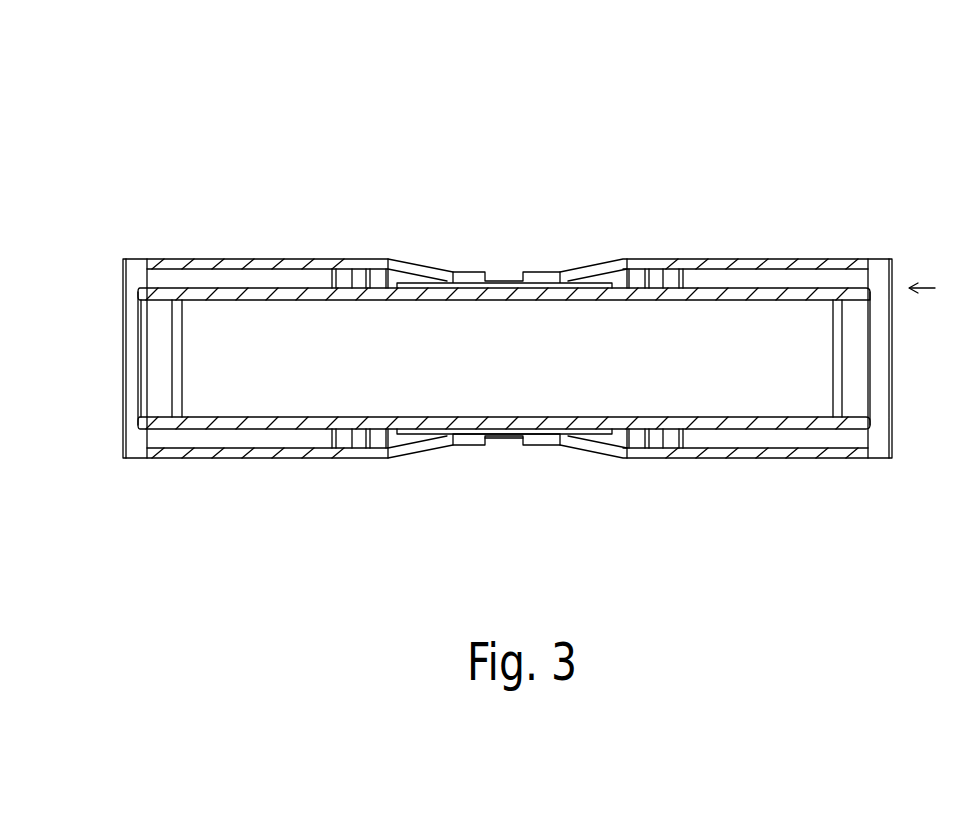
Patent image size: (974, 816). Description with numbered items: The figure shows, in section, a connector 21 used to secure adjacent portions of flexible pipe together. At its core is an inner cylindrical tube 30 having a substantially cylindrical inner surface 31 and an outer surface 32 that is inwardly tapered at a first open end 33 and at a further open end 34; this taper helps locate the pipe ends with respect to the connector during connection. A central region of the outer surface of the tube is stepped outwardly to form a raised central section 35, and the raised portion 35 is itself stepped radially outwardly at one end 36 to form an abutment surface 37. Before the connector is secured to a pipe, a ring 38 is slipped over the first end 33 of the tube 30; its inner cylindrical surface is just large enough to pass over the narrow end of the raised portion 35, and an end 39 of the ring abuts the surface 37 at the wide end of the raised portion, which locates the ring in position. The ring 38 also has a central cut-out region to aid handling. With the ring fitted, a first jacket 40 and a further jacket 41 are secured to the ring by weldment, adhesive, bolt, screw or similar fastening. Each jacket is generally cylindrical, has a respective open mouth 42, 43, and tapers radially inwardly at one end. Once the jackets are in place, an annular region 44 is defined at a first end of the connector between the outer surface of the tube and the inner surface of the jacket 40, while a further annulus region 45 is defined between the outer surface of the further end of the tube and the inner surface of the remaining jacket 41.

The connector 21 is at (592, 103).
The inner cylindrical tube 30 is at (220, 437).
The inner surface 31 is at (292, 407).
The outer surface 32 is at (778, 428).
The first open end 33 is at (155, 392).
The further open end 34 is at (857, 400).
The raised central section 35 is at (420, 434).
The end of raised portion 36 is at (607, 455).
The abutment surface 37 is at (560, 446).
The ring 38 is at (498, 428).
The end of ring 39 is at (557, 272).
The first jacket 40 is at (213, 258).
The further jacket 41 is at (817, 257).
The open mouth 42 is at (100, 318).
The open mouth 43 is at (935, 291).
The annular region 44 is at (277, 277).
The further annulus region 45 is at (723, 283).